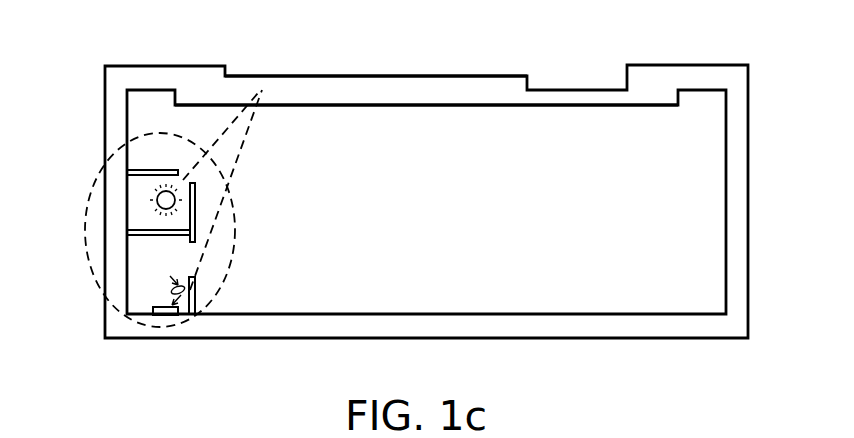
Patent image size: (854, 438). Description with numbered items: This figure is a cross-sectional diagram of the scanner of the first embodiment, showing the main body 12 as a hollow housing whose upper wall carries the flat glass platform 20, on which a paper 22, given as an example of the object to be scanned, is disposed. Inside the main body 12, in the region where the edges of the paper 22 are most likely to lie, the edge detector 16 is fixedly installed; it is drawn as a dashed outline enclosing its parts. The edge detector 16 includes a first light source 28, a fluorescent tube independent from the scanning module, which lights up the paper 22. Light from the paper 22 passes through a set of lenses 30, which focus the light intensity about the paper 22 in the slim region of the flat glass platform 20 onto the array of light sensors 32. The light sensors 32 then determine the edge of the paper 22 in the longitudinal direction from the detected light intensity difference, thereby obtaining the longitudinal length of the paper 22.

The main body 12 is at (685, 327).
The edge detector 16 is at (92, 278).
The flat glass platform 20 is at (450, 97).
The paper 22 is at (323, 85).
The first light source 28 is at (152, 168).
The set of lenses 30 is at (190, 287).
The array of light sensors 32 is at (167, 315).